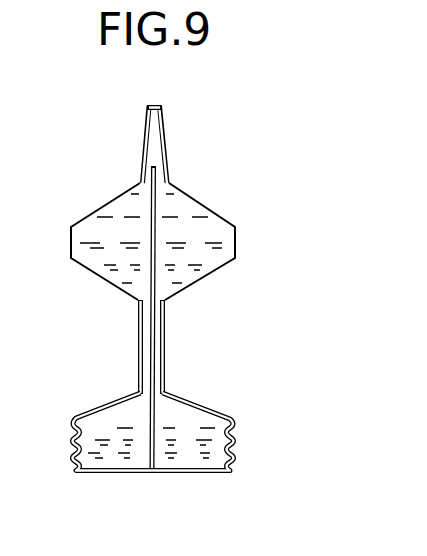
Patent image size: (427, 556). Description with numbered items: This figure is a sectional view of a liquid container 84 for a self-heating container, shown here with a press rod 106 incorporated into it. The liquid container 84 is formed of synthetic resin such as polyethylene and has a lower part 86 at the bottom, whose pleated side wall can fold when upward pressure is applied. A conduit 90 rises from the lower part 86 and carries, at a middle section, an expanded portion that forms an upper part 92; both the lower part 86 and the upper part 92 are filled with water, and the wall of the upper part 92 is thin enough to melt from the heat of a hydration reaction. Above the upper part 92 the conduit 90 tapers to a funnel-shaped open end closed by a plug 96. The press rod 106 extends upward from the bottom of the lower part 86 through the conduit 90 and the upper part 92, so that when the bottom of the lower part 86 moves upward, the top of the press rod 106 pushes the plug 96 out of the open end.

The liquid container 84 is at (176, 342).
The lower part 86 is at (228, 419).
The conduit 90 is at (165, 368).
The upper part 92 is at (215, 212).
The plug 96 is at (157, 105).
The press rod 106 is at (148, 420).